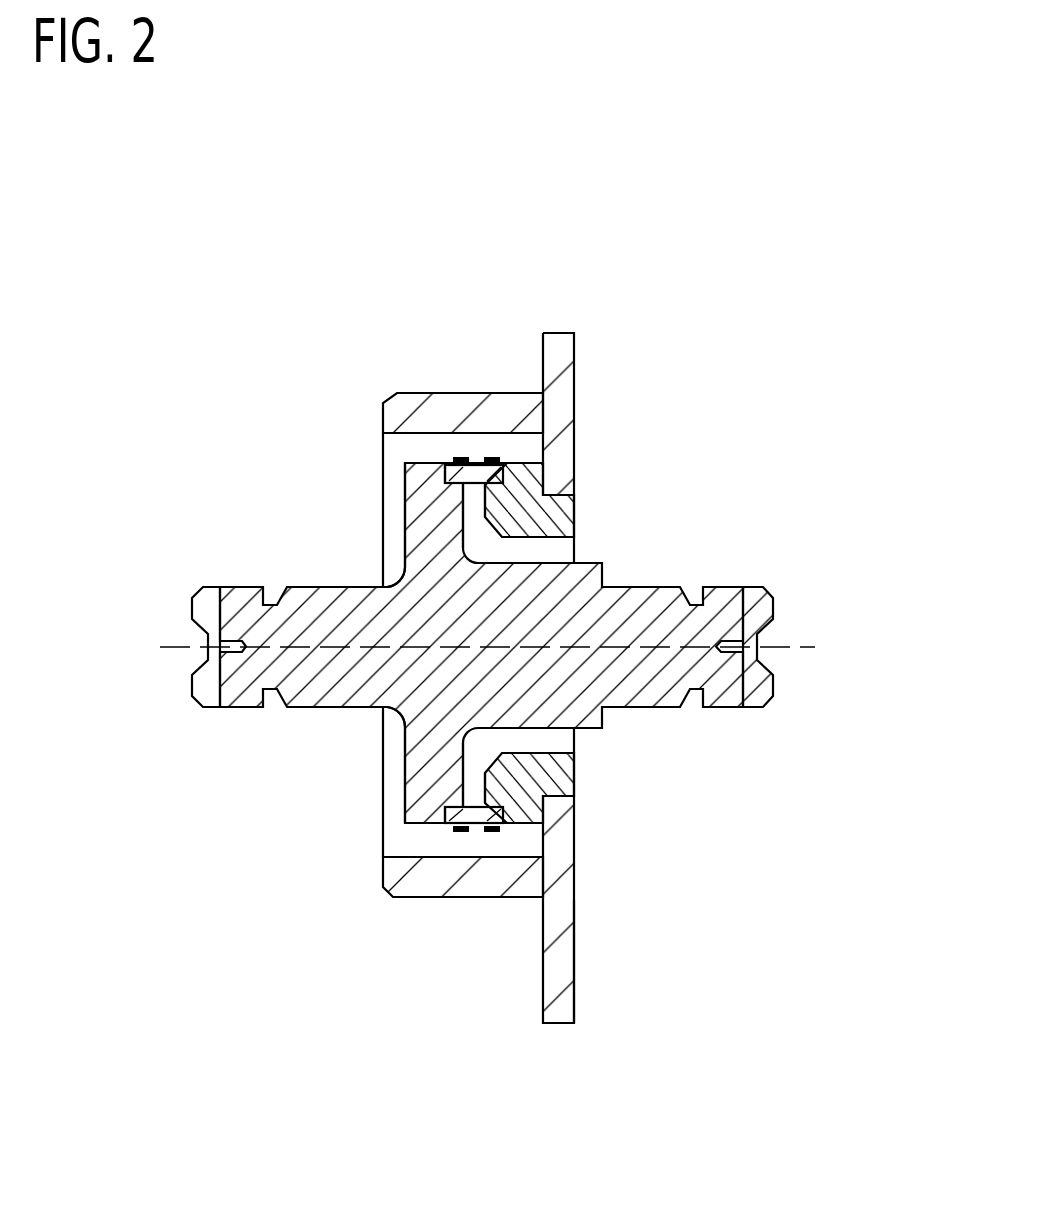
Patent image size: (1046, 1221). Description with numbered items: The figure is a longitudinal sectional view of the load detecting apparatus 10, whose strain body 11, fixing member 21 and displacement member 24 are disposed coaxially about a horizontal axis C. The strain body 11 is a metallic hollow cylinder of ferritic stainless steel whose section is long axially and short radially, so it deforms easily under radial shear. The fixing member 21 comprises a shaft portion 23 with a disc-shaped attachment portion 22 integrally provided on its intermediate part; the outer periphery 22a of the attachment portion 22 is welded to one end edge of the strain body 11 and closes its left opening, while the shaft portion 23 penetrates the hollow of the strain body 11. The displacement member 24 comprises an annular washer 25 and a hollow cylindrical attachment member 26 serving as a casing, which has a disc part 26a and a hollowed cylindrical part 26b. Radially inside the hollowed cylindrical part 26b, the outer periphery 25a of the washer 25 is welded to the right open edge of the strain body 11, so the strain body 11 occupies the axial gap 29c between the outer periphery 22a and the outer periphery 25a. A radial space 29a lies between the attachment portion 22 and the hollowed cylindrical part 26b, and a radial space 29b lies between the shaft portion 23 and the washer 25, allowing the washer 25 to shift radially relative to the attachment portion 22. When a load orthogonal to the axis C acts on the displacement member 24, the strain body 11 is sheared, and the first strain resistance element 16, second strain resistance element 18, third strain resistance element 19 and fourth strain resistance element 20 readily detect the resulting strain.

The load detecting apparatus 10 is at (779, 256).
The strain body 11 is at (481, 474).
The first strain resistance element 16 is at (492, 835).
The second strain resistance element 18 is at (460, 836).
The third strain resistance element 19 is at (497, 462).
The fourth strain resistance element 20 is at (458, 460).
The fixing member 21 is at (315, 569).
The attachment portion 22 is at (423, 498).
The outer periphery of the attachment portion 22a is at (460, 797).
The shaft portion 23 is at (533, 673).
The displacement member 24 is at (593, 408).
The washer 25 is at (535, 524).
The outer periphery of the washer 25a is at (488, 800).
The attachment member 26 is at (525, 913).
The disc part 26a is at (564, 963).
The hollowed cylindrical part 26b is at (428, 885).
The radial space 29a is at (420, 441).
The radial space 29b is at (547, 551).
The axial gap 29c is at (455, 512).
The axis C is at (812, 645).